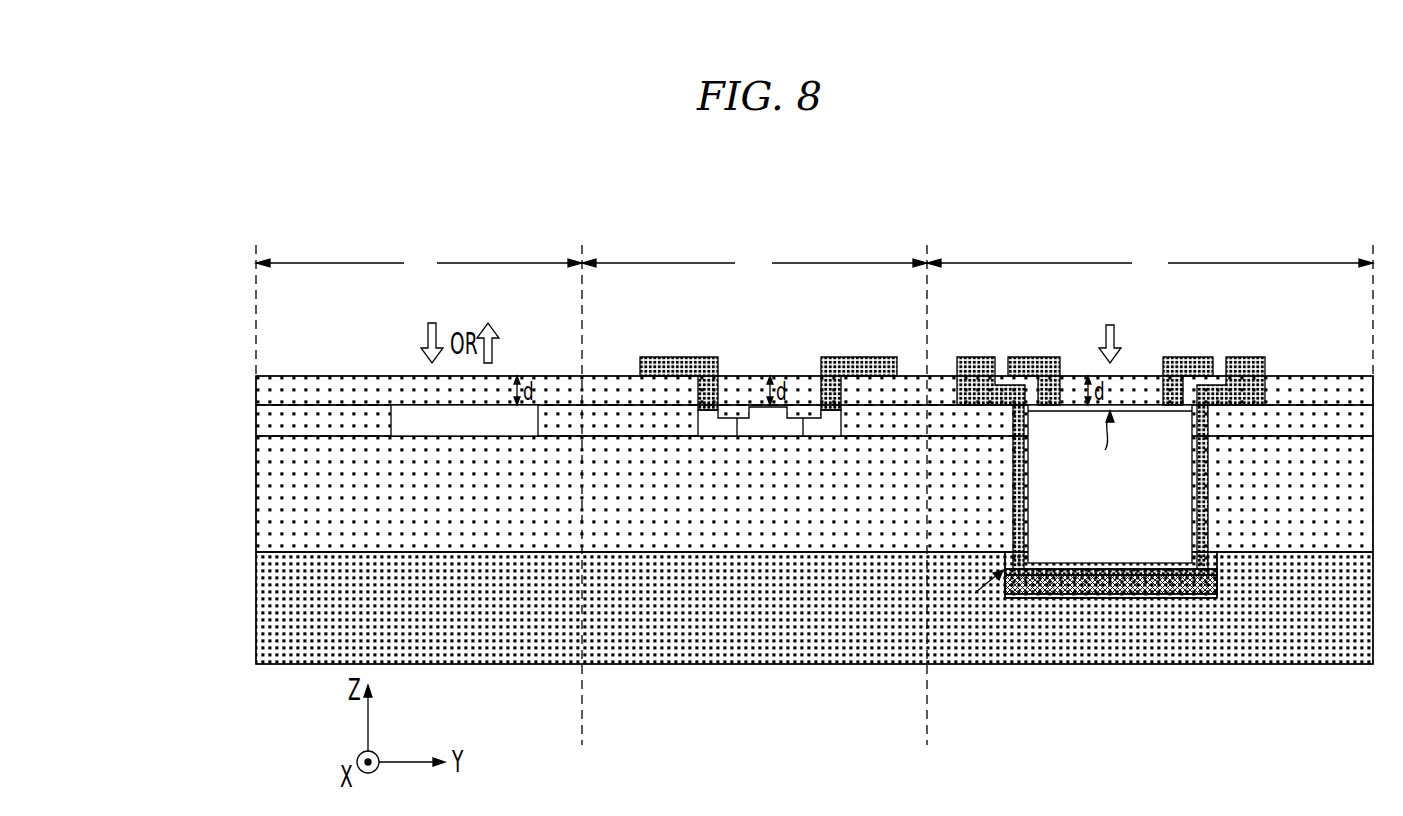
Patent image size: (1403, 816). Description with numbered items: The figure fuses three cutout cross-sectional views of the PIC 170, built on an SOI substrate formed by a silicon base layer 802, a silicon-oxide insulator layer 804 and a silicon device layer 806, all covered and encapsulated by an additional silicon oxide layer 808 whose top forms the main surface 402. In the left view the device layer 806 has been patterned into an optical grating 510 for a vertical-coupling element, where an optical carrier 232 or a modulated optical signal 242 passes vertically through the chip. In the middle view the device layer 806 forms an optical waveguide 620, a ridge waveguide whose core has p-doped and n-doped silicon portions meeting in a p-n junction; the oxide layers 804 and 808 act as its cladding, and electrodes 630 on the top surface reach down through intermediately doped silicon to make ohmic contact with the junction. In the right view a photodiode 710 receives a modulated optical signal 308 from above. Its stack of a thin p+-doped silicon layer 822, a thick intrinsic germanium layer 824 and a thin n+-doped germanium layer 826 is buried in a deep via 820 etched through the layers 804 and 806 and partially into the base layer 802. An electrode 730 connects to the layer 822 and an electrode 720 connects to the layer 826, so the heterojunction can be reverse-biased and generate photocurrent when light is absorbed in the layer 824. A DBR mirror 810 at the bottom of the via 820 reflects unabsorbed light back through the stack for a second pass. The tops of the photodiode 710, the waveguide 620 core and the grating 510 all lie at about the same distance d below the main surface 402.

The PIC 170 is at (305, 237).
The photodiode 710 is at (1049, 242).
The main surface 402 is at (290, 373).
The silicon oxide layer 808 is at (262, 385).
The silicon device layer 806 is at (246, 418).
The silicon-oxide insulator layer 804 is at (262, 485).
The silicon base layer 802 is at (262, 598).
The optical carrier 232 is at (420, 343).
The modulated optical signal 242 is at (505, 343).
The optical grating 510 is at (432, 438).
The electrode 630 is at (861, 358).
The optical waveguide 620 is at (770, 440).
The electrode 730 is at (977, 356).
The electrode 720 is at (1029, 356).
The modulated optical signal 308 is at (1100, 342).
The deep via 820 is at (1148, 388).
The layer 826 is at (1186, 414).
The layer 824 is at (1180, 510).
The layer 822 is at (1222, 572).
The DBR mirror 810 is at (1218, 590).